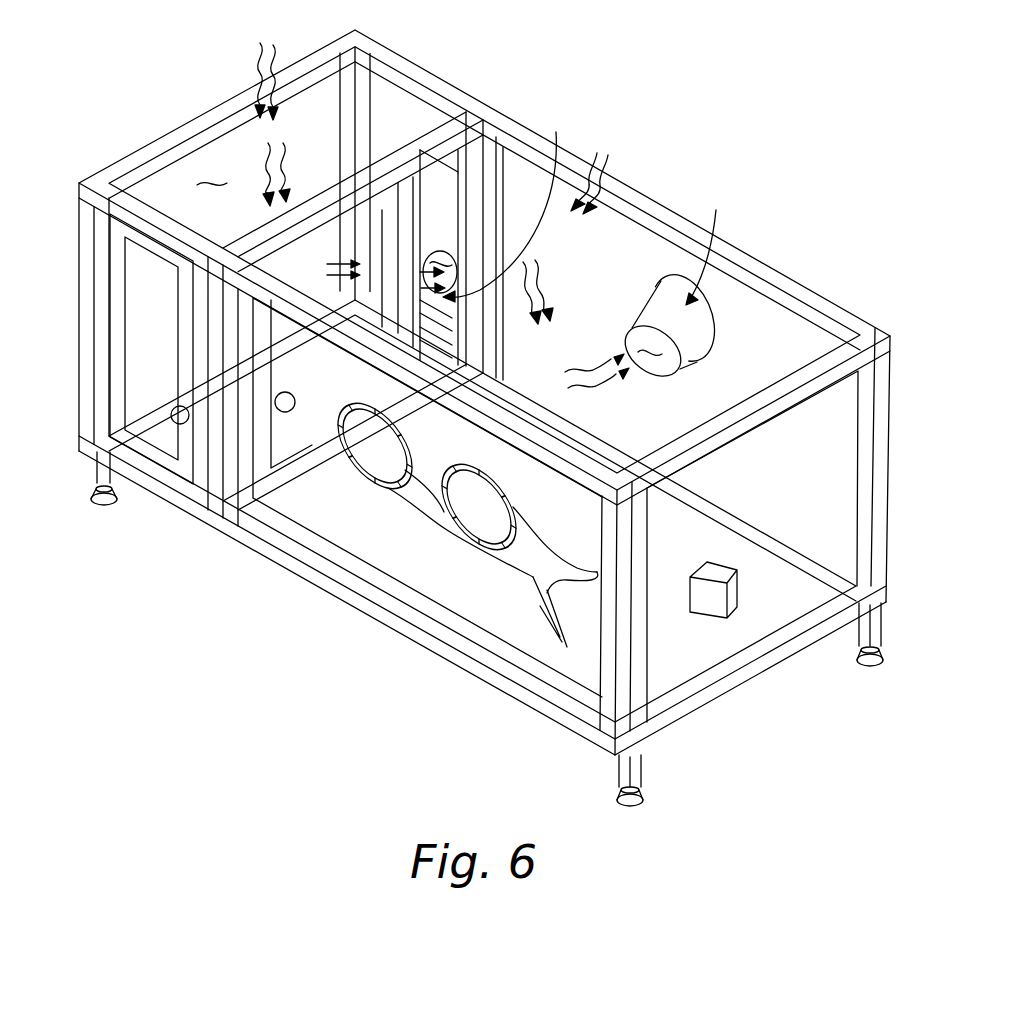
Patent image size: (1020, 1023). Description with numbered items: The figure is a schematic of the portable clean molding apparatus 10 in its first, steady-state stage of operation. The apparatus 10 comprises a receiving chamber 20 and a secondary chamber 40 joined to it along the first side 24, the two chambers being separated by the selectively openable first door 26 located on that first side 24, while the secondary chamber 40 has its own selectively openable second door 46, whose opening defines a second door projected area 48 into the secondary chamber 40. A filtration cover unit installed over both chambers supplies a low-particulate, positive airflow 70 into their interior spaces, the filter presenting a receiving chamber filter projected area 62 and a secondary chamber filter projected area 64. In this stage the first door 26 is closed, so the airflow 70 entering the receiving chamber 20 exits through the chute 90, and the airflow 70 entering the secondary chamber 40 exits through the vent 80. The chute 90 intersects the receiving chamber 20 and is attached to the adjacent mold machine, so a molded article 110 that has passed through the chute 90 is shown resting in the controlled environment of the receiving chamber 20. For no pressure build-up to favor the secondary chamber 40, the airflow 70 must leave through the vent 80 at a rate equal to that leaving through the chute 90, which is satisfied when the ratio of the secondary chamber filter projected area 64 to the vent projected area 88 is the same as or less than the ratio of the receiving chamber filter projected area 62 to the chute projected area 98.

The portable clean molding apparatus 10 is at (724, 114).
The receiving chamber 20 is at (484, 418).
The first side 24 is at (463, 194).
The first door 26 is at (339, 410).
The secondary chamber 40 is at (124, 351).
The second door 46 is at (164, 342).
The second door projected area 48 is at (178, 430).
The receiving chamber filter projected area 62 is at (778, 336).
The secondary chamber filter projected area 64 is at (213, 177).
The airflow 70 is at (260, 53).
The vent 80 is at (505, 205).
The vent projected area 88 is at (438, 272).
The chute 90 is at (704, 290).
The chute projected area 98 is at (708, 245).
The molded article 110 is at (712, 607).